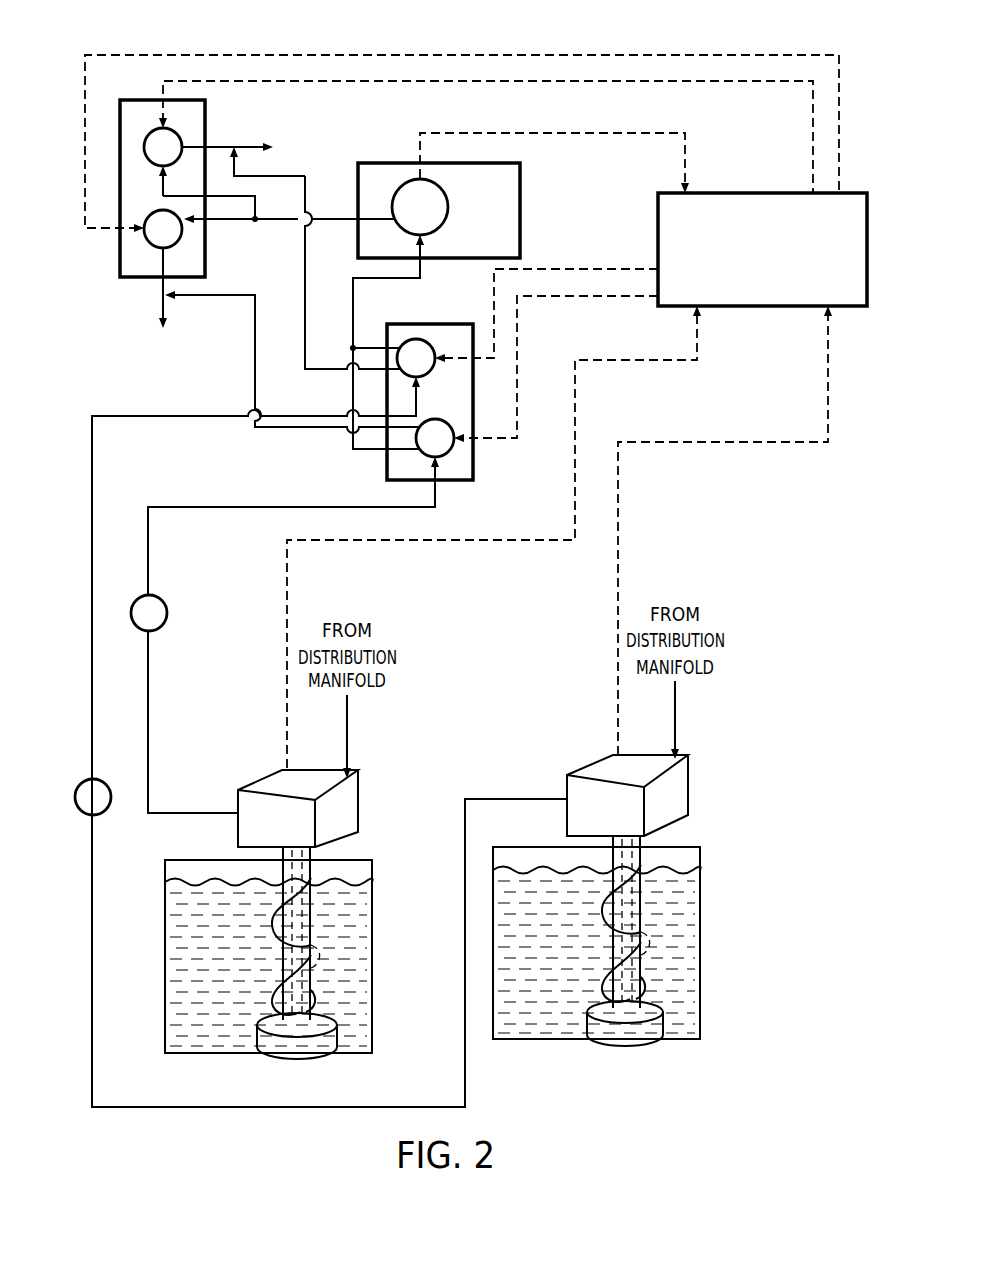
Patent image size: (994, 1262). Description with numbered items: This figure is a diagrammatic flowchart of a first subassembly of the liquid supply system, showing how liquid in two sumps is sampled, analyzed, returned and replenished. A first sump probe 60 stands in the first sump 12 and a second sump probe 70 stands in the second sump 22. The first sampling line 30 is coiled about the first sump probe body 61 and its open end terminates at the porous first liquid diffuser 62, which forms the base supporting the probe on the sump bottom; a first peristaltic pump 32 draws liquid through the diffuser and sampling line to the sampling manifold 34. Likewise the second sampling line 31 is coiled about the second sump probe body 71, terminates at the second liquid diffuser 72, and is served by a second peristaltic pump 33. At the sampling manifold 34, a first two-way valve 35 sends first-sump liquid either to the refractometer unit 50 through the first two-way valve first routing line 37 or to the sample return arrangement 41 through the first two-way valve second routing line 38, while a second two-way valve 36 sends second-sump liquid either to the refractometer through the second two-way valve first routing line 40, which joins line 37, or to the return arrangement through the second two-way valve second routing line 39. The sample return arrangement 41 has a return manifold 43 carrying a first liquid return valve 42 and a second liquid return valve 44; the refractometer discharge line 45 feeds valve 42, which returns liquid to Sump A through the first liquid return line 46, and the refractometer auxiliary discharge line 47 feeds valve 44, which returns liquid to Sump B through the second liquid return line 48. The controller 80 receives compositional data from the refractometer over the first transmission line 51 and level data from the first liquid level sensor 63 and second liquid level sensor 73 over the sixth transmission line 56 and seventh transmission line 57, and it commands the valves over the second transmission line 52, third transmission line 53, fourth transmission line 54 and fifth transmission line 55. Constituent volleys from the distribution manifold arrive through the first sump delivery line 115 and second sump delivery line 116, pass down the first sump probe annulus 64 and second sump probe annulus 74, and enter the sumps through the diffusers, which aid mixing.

The first sump 12 is at (372, 1042).
The second sump 22 is at (700, 1028).
The first sampling line 30 is at (149, 718).
The second sampling line 31 is at (91, 882).
The first peristaltic pump 32 is at (168, 612).
The second peristaltic pump 33 is at (82, 783).
The sampling manifold 34 is at (465, 482).
The first two-way valve 35 is at (452, 452).
The second two-way valve 36 is at (415, 339).
The first two-way valve first routing line 37 is at (364, 452).
The first two-way valve second routing line 38 is at (254, 370).
The second two-way valve second routing line 39 is at (304, 245).
The second two-way valve first routing line 40 is at (365, 347).
The sample return arrangement 41 is at (78, 321).
The first liquid return valve 42 is at (149, 241).
The return manifold 43 is at (207, 110).
The second liquid return valve 44 is at (150, 133).
The refractometer discharge line 45 is at (337, 222).
The first liquid return line 46 is at (162, 304).
The refractometer auxiliary discharge line 47 is at (252, 195).
The second liquid return line 48 is at (257, 140).
The refractometer unit 50 is at (521, 215).
The first transmission line 51 is at (610, 133).
The second transmission line 52 is at (568, 296).
The third transmission line 53 is at (600, 269).
The fourth transmission line 54 is at (590, 55).
The fifth transmission line 55 is at (735, 81).
The sixth transmission line 56 is at (438, 541).
The seventh transmission line 57 is at (720, 443).
The first sump probe 60 is at (341, 786).
The first sump probe body 61 is at (312, 930).
The first liquid diffuser 62 is at (297, 1047).
The first liquid level sensor 63 is at (305, 948).
The first sump probe annulus 64 is at (312, 1000).
The second sump probe 70 is at (670, 775).
The second sump probe body 71 is at (642, 917).
The second liquid diffuser 72 is at (625, 1035).
The second liquid level sensor 73 is at (635, 935).
The second sump probe annulus 74 is at (642, 987).
The controller 80 is at (752, 193).
The first sump delivery line 115 is at (348, 732).
The second sump delivery line 116 is at (676, 720).